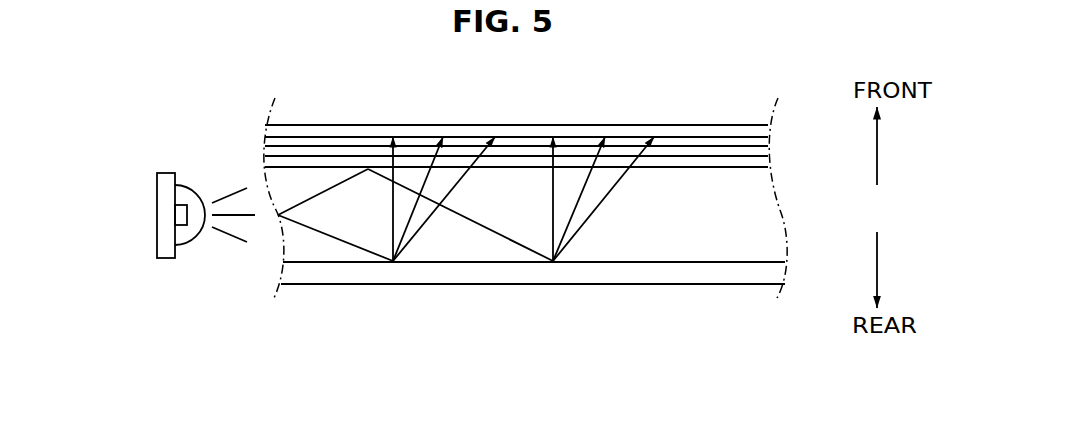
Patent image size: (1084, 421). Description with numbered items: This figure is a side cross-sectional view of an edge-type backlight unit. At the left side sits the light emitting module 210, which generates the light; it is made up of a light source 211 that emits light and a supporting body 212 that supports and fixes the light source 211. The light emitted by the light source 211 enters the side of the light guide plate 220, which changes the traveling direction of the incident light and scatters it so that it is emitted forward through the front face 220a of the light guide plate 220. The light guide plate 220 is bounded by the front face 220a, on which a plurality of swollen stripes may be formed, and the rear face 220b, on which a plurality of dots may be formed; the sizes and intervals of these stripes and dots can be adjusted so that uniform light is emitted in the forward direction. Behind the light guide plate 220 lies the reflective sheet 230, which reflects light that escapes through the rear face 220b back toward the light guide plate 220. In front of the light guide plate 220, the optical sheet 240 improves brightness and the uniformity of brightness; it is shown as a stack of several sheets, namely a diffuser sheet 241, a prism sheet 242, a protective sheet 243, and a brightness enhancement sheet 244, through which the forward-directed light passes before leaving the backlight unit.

The light emitting module 210 is at (180, 283).
The light source 211 is at (187, 237).
The supporting body 212 is at (160, 243).
The light guide plate 220 is at (770, 227).
The front face of the light guide plate 220a is at (708, 168).
The rear face of the light guide plate 220b is at (680, 262).
The reflective sheet 230 is at (375, 275).
The optical sheet 240 is at (416, 114).
The diffuser sheet 241 is at (265, 163).
The prism sheet 242 is at (265, 150).
The protective sheet 243 is at (265, 140).
The brightness enhancement sheet 244 is at (265, 132).